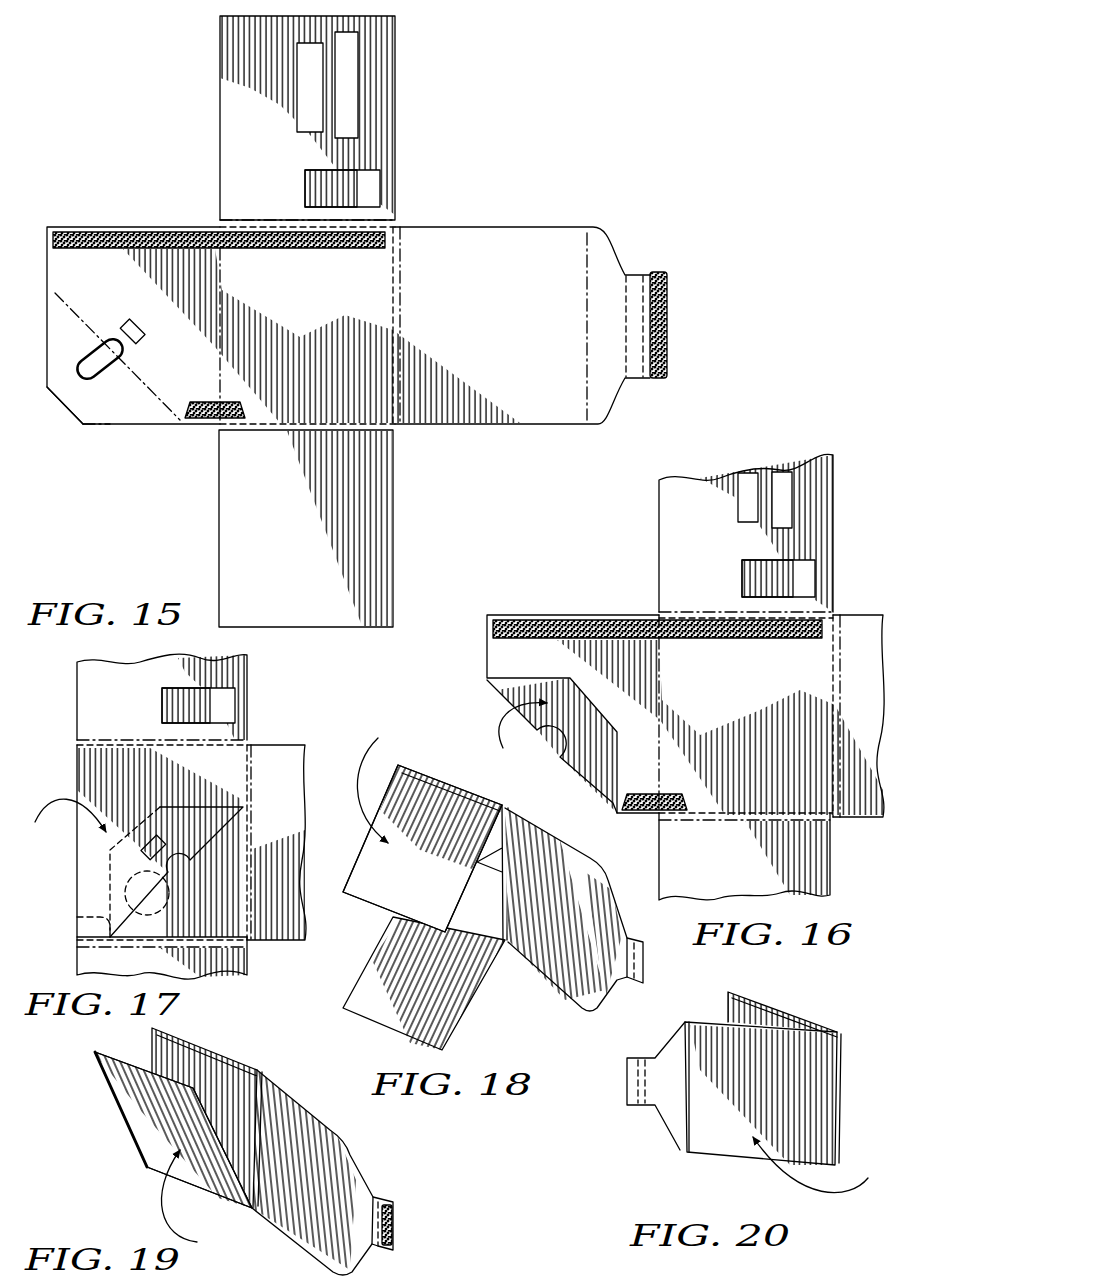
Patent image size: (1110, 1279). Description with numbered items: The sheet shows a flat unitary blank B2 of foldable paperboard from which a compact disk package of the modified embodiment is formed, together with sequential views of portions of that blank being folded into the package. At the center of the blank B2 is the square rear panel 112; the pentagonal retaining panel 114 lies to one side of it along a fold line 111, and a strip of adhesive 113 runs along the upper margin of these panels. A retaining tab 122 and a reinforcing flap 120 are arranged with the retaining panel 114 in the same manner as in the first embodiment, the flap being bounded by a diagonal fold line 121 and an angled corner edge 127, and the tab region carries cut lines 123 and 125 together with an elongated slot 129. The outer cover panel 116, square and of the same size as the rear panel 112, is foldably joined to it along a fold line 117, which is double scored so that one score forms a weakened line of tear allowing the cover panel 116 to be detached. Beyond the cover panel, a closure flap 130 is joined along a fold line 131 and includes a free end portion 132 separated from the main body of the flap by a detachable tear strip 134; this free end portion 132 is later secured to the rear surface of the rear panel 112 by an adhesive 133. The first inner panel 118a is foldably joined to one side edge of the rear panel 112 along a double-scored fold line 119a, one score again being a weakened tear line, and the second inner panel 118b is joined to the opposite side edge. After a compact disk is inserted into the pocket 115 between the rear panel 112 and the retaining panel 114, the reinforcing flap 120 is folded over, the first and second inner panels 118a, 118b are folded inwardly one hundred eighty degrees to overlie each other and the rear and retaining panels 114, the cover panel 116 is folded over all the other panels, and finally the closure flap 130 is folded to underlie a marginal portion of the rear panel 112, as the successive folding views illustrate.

In FIG. 15, the unitary blank B2 is at (483, 169).
In FIG. 15, the fold line 111 is at (221, 390).
In FIG. 15, the rear panel 112 is at (325, 305).
In FIG. 16, the rear panel 112 is at (756, 692).
In FIG. 17, the rear panel 112 is at (224, 883).
In FIG. 18, the rear panel 112 is at (492, 873).
In FIG. 15, the adhesive strip 113 is at (257, 247).
In FIG. 16, the adhesive strip 113 is at (561, 621).
In FIG. 15, the retaining panel 114 is at (187, 371).
In FIG. 16, the retaining panel 114 is at (544, 665).
In FIG. 17, the retaining panel 114 is at (212, 780).
In FIG. 17, the pocket 115 is at (151, 906).
In FIG. 15, the outer cover panel 116 is at (516, 305).
In FIG. 16, the outer cover panel 116 is at (881, 692).
In FIG. 17, the outer cover panel 116 is at (286, 756).
In FIG. 18, the outer cover panel 116 is at (570, 917).
In FIG. 19, the outer cover panel 116 is at (320, 1130).
In FIG. 20, the outer cover panel 116 is at (791, 1085).
In FIG. 15, the fold line 117 is at (399, 299).
In FIG. 15, the first inner panel 118a is at (274, 148).
In FIG. 16, the first inner panel 118a is at (729, 557).
In FIG. 17, the first inner panel 118a is at (242, 964).
In FIG. 18, the first inner panel 118a is at (460, 839).
In FIG. 19, the first inner panel 118a is at (232, 1065).
In FIG. 20, the first inner panel 118a is at (782, 1014).
In FIG. 15, the second inner panel 118b is at (331, 532).
In FIG. 16, the second inner panel 118b is at (759, 875).
In FIG. 17, the second inner panel 118b is at (141, 695).
In FIG. 18, the second inner panel 118b is at (428, 1003).
In FIG. 19, the second inner panel 118b is at (116, 1115).
In FIG. 15, the fold line 119a is at (276, 224).
In FIG. 15, the reinforcing flap 120 is at (132, 410).
In FIG. 16, the reinforcing flap 120 is at (497, 688).
In FIG. 17, the reinforcing flap 120 is at (139, 868).
In FIG. 15, the diagonal fold line 121 is at (76, 312).
In FIG. 15, the retaining tab 122 is at (141, 333).
In FIG. 17, the retaining tab 122 is at (153, 847).
In FIG. 15, the cut line 123 is at (130, 328).
In FIG. 15, the cut 125 is at (124, 336).
In FIG. 15, the chamfered corner edge 127 is at (74, 394).
In FIG. 15, the elongated slot 129 is at (92, 360).
In FIG. 15, the closure flap 130 is at (620, 238).
In FIG. 18, the closure flap 130 is at (624, 932).
In FIG. 19, the closure flap 130 is at (354, 1186).
In FIG. 20, the closure flap 130 is at (674, 1118).
In FIG. 15, the fold line 131 is at (584, 266).
In FIG. 15, the free end portion 132 is at (668, 350).
In FIG. 15, the adhesive 133 is at (667, 314).
In FIG. 15, the detachable tear strip 134 is at (636, 275).